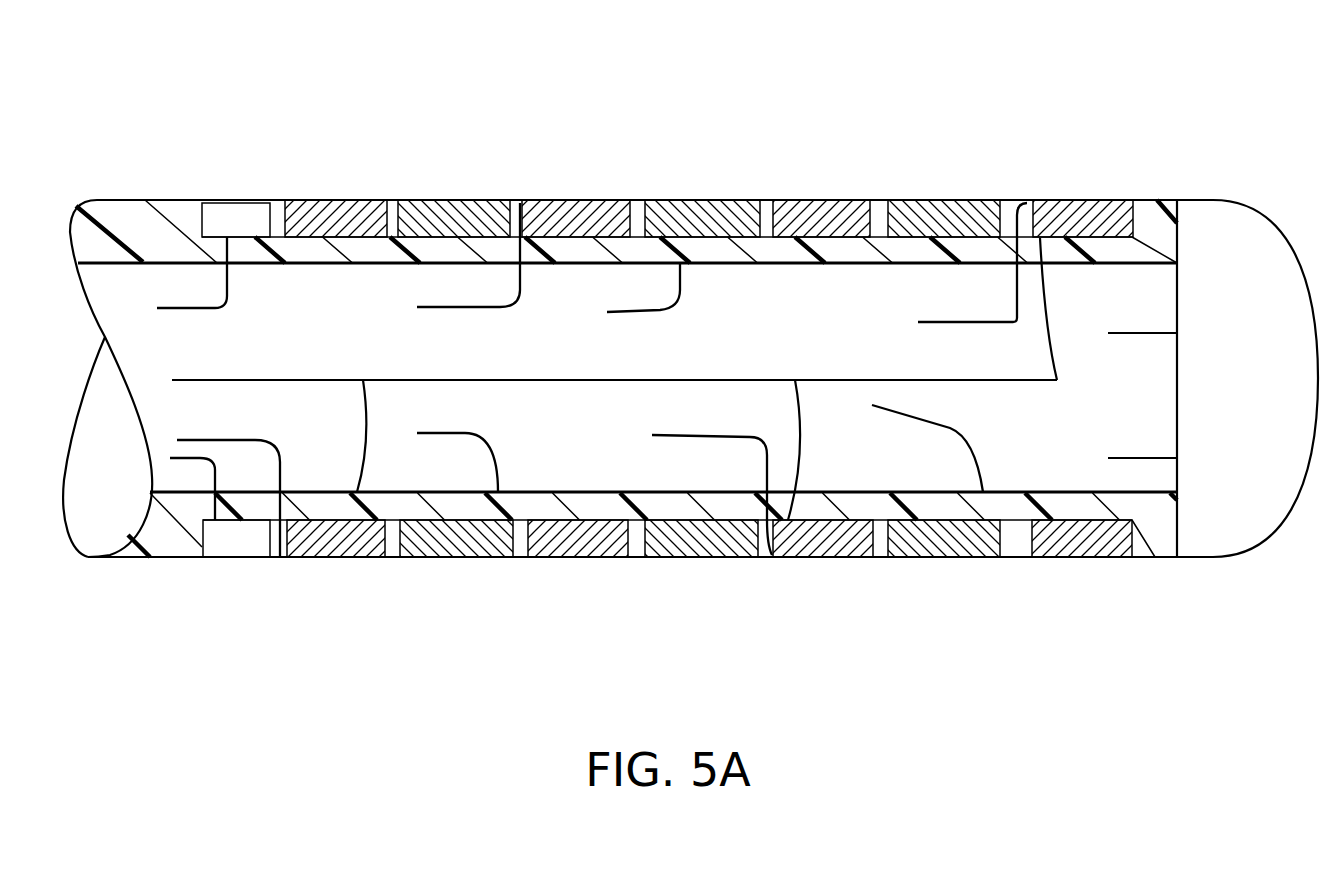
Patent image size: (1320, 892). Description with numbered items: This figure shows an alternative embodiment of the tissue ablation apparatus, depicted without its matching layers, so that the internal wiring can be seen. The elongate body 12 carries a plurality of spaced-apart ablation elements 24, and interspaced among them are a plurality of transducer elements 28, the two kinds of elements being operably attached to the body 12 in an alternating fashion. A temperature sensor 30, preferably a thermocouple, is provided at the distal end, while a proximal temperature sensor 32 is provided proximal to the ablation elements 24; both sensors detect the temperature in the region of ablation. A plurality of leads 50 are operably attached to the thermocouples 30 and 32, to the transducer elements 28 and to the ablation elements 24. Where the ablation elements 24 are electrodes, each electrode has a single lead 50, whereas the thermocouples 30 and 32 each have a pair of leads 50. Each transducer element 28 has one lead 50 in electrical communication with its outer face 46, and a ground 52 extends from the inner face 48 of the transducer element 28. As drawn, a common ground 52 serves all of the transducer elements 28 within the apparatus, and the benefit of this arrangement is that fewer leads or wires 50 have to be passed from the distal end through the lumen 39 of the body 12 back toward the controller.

The elongate body 12 is at (1143, 222).
The ablation elements 24 is at (461, 215).
The transducer elements 28 is at (340, 205).
The temperature sensor 30 is at (1212, 333).
The proximal temperature sensor 32 is at (213, 213).
The lumen 39 is at (534, 432).
The outer face 46 is at (313, 557).
The inner face 48 is at (317, 492).
The leads 50 is at (230, 297).
The ground 52 is at (210, 377).